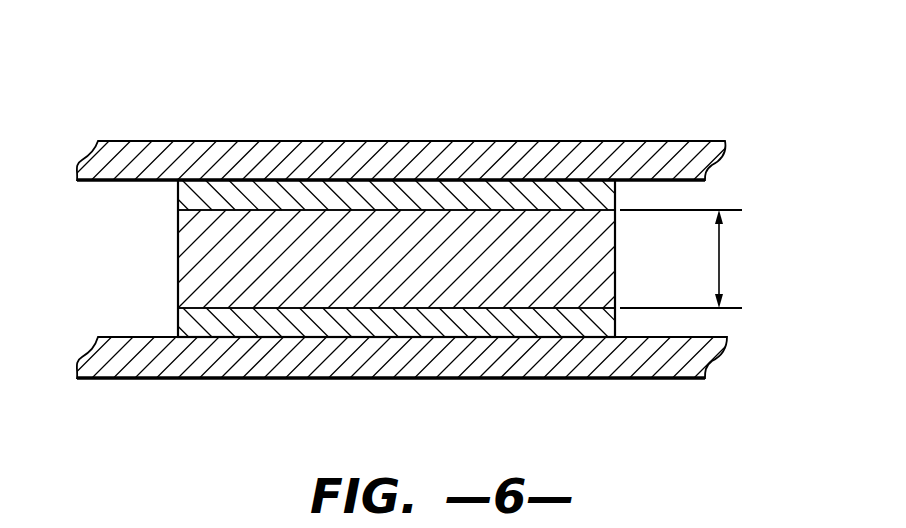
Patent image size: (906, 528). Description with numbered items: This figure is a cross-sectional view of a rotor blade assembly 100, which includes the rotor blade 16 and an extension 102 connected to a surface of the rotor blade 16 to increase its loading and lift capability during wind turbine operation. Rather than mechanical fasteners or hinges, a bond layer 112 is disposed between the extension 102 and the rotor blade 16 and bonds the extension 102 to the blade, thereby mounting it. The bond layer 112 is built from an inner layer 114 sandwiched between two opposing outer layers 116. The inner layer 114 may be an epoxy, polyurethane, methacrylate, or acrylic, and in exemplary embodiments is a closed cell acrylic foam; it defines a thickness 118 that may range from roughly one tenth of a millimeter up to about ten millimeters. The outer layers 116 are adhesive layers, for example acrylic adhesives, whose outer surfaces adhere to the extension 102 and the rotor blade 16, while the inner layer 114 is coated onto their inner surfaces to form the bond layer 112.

The rotor blade assembly 100 is at (474, 94).
The rotor blade 16 is at (525, 167).
The extension 102 is at (522, 360).
The bond layer 112 is at (155, 279).
The inner layer 114 is at (168, 260).
The outer layers 116 is at (168, 193).
The thickness 118 is at (719, 262).